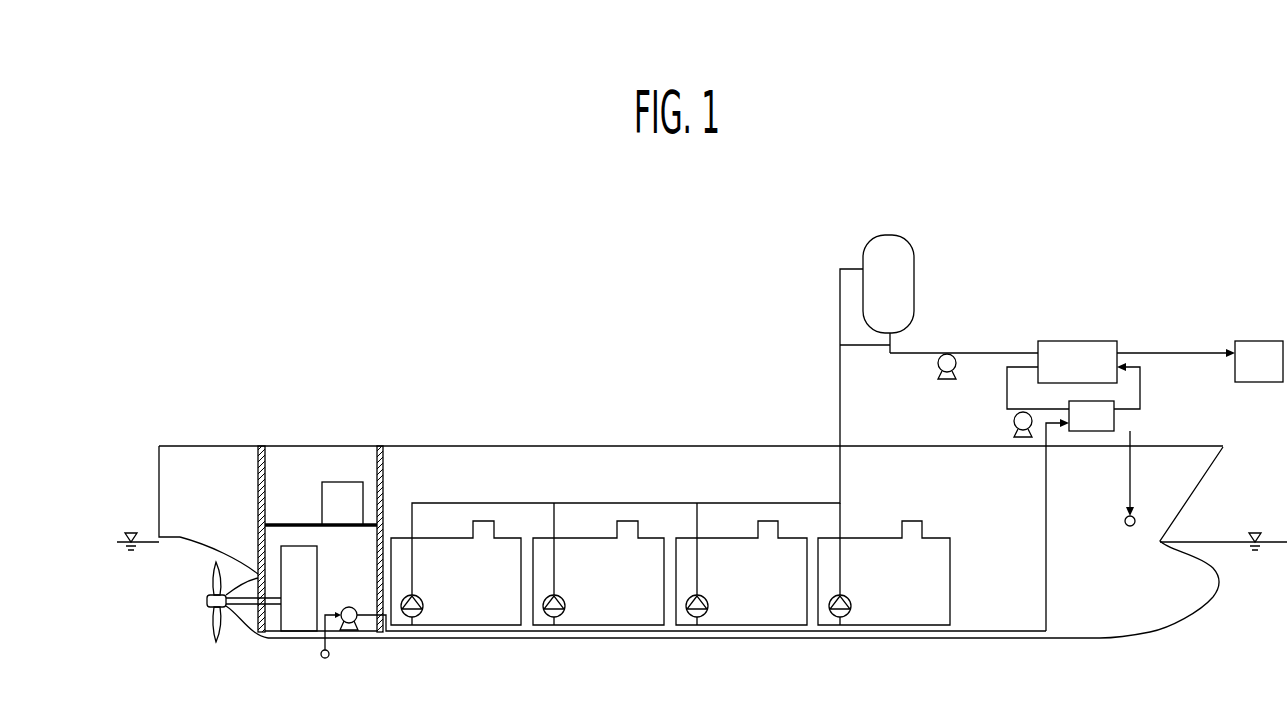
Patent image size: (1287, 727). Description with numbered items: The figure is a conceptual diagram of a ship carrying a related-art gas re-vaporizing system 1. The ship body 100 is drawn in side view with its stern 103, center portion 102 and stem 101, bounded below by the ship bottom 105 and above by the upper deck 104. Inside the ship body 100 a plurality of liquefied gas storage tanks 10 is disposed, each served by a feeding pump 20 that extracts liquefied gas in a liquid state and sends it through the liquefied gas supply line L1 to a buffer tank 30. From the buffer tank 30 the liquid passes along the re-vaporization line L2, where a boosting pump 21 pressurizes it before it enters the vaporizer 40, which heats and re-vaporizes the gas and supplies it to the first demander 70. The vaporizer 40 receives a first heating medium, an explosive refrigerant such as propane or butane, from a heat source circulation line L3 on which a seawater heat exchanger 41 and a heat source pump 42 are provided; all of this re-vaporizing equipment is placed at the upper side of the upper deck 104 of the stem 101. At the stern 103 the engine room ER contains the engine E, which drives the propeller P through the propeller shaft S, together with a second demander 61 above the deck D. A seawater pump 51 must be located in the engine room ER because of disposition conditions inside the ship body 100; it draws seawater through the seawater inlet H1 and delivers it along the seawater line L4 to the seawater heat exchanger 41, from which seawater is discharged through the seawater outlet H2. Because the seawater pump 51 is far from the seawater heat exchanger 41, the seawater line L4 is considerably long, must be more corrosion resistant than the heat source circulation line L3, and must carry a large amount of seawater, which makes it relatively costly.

The gas re-vaporizing system 1 is at (224, 255).
The storage tank 10 is at (458, 626).
The feeding pump 20 is at (412, 618).
The boosting pump 21 is at (937, 363).
The buffer tank 30 is at (888, 235).
The vaporizer 40 is at (1077, 339).
The seawater heat exchanger 41 is at (1115, 417).
The heat source pump 42 is at (1014, 423).
The seawater pump 51 is at (348, 607).
The second demander 61 is at (342, 486).
The first demander 70 is at (1260, 339).
The ship body 100 is at (1212, 598).
The stem 101 is at (1160, 615).
The center portion 102 is at (686, 456).
The stern 103 is at (200, 541).
The upper deck 104 is at (228, 445).
The ship bottom 105 is at (705, 642).
The deck D is at (277, 524).
The engine E is at (293, 628).
The engine room ER is at (290, 475).
The seawater inlet H1 is at (325, 658).
The seawater outlet H2 is at (1125, 521).
The liquefied gas supply line L1 is at (842, 516).
The re-vaporization line L2 is at (1005, 352).
The heat source circulation line L3 is at (1142, 387).
The seawater line L4 is at (1045, 488).
The propeller P is at (216, 644).
The propeller shaft S is at (230, 611).